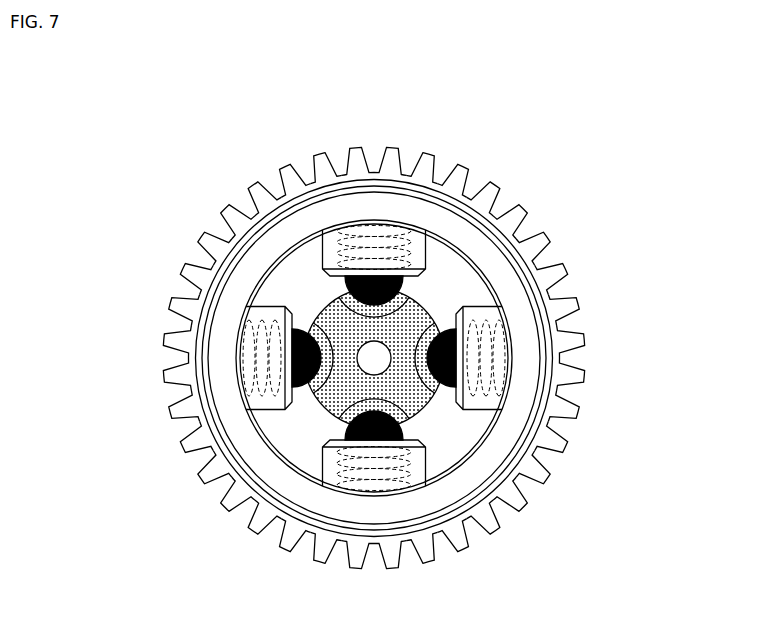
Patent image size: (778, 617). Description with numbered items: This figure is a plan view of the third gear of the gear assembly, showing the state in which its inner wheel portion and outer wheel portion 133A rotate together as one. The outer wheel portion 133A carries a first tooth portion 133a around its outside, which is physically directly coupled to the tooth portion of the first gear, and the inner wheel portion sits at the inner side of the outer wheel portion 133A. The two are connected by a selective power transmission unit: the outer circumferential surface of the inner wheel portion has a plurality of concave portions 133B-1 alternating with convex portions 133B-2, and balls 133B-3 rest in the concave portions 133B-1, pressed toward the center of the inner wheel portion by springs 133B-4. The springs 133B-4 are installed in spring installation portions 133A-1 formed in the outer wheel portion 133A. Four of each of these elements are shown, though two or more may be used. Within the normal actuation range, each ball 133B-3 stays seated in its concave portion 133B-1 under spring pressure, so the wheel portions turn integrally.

The outer wheel portion 133A is at (232, 313).
The first tooth portion 133a is at (168, 340).
The spring installation portion 133A-1 is at (428, 252).
The concave portion 133B-1 is at (338, 290).
The convex portion 133B-2 is at (318, 310).
The ball 133B-3 is at (435, 283).
The spring 133B-4 is at (398, 245).